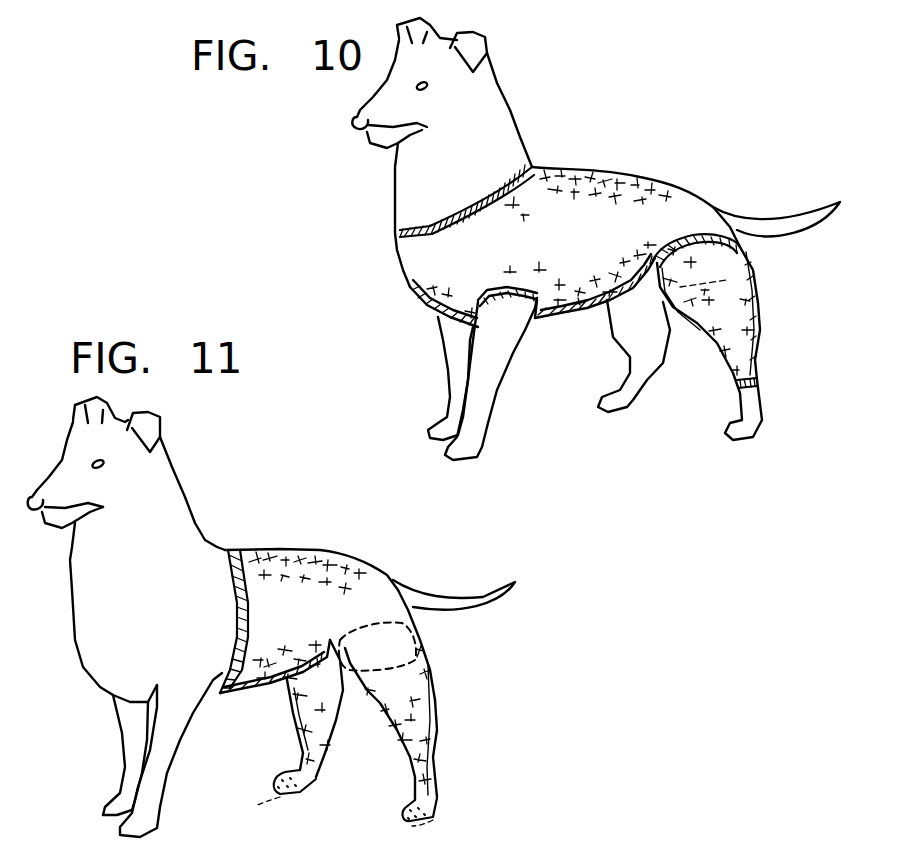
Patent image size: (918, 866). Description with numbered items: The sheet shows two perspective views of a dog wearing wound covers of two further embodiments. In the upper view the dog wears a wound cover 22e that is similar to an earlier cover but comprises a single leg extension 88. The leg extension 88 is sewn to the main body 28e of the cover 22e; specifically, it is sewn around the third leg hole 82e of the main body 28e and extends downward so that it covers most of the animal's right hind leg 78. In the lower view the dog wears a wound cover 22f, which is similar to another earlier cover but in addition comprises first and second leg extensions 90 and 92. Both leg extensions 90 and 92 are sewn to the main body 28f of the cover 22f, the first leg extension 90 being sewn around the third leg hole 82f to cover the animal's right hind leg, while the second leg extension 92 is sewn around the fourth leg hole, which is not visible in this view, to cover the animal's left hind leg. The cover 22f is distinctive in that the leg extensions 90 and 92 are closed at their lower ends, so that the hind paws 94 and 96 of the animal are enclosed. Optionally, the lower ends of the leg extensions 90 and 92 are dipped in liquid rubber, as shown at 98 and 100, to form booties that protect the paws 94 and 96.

In FIG. 10, the wound cover 22e is at (587, 162).
In FIG. 10, the main body 28e is at (623, 187).
In FIG. 10, the third leg hole 82e is at (760, 295).
In FIG. 10, the leg extension 88 is at (758, 322).
In FIG. 10, the right hind leg 78 is at (757, 393).
In FIG. 11, the wound cover 22f is at (280, 548).
In FIG. 11, the main body 28f is at (330, 577).
In FIG. 11, the third leg hole 82f is at (440, 662).
In FIG. 11, the first leg extension 90 is at (423, 697).
In FIG. 11, the second leg extension 92 is at (283, 693).
In FIG. 11, the bootie 98 is at (273, 782).
In FIG. 11, the hind paw 94 is at (280, 797).
In FIG. 11, the bootie 100 is at (437, 805).
In FIG. 11, the hind paw 96 is at (433, 820).